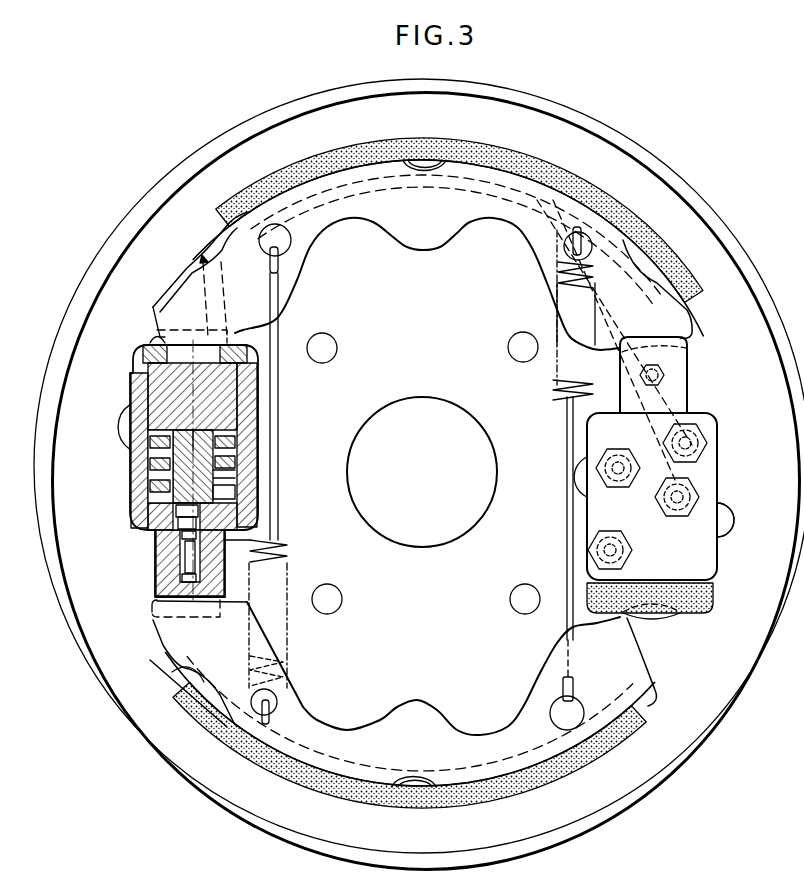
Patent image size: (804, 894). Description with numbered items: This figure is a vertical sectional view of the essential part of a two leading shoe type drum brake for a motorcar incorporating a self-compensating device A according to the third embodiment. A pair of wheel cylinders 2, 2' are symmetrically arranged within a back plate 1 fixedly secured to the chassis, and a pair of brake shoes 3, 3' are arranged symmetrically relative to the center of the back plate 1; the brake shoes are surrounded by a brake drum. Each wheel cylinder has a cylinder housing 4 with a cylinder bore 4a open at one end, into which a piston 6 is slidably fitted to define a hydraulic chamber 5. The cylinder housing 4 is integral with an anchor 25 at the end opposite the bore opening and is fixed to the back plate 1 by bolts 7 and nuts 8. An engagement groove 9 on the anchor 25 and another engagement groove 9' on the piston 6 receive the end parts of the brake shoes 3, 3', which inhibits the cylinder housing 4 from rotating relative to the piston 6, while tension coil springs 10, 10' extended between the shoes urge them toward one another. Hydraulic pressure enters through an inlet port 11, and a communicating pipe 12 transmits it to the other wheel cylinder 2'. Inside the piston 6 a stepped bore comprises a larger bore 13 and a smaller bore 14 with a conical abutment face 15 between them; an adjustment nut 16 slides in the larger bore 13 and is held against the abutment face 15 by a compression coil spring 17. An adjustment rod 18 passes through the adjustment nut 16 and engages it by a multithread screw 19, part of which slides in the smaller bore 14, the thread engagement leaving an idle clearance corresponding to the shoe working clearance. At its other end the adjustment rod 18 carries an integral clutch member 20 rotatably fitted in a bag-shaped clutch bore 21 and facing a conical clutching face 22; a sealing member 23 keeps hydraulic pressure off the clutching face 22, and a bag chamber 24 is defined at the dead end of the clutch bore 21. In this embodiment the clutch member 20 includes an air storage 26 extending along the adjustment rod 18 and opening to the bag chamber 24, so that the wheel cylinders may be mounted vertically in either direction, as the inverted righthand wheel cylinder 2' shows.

The back plate 1 is at (540, 128).
The wheel cylinder 2 is at (177, 471).
The wheel cylinder 2' is at (663, 496).
The brake shoe 3 is at (410, 731).
The brake shoe 3' is at (448, 237).
The cylinder housing 4 is at (715, 472).
The cylinder bore 4a is at (146, 387).
The hydraulic chamber 5 is at (236, 494).
The piston 6 is at (652, 616).
The bolt 7 is at (685, 440).
The nut 8 is at (700, 440).
The engagement groove 9 is at (171, 617).
The engagement groove 9' is at (188, 325).
The tension coil spring 10 is at (287, 545).
The tension coil spring 10' is at (557, 334).
The inlet port 11 is at (150, 512).
The communicating pipe 12 is at (412, 190).
The larger bore 13 is at (236, 474).
The smaller bore 14 is at (170, 438).
The conical abutment face 15 is at (152, 462).
The adjustment nut 16 is at (152, 476).
The compression coil spring 17 is at (152, 492).
The adjustment rod 18 is at (226, 510).
The multithread screw 19 is at (193, 430).
The clutch member 20 is at (175, 512).
The clutch bore 21 is at (180, 526).
The conical clutching face 22 is at (184, 560).
The sealing member 23 is at (243, 547).
The bag chamber 24 is at (254, 624).
The anchor 25 is at (676, 362).
The air storage 26 is at (182, 538).
The self-compensating device A is at (135, 528).